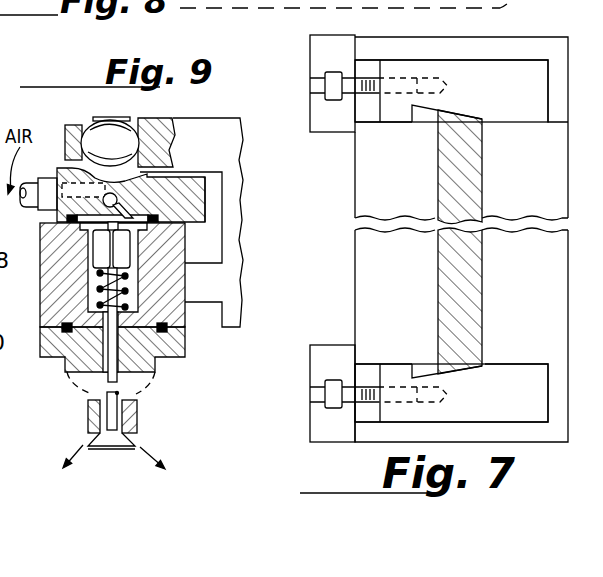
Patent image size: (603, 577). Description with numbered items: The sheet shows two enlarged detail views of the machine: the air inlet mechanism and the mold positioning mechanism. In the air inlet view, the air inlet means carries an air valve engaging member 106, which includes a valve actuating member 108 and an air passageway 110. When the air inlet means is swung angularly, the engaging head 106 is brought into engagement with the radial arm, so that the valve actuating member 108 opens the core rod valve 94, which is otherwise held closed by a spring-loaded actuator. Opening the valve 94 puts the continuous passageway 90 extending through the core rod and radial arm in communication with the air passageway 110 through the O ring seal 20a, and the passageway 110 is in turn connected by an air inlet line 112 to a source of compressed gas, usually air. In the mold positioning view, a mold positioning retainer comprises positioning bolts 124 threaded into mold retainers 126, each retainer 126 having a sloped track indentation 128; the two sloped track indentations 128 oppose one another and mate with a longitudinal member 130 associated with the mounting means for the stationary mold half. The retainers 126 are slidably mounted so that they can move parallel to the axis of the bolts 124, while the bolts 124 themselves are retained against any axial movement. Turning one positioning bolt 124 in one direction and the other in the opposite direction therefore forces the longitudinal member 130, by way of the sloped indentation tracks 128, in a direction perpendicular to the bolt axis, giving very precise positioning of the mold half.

In FIG. 9, the air valve engaging member 106 is at (186, 190).
In FIG. 9, the air passageway 110 is at (158, 214).
In FIG. 9, the O ring seal 20a is at (162, 221).
In FIG. 9, the valve actuating member 108 is at (117, 230).
In FIG. 9, the continuous passageway 90 is at (128, 304).
In FIG. 9, the core rod valve 94 is at (117, 442).
In FIG. 9, the air inlet line 112 is at (30, 186).
In FIG. 7, the positioning bolts 124 is at (332, 83).
In FIG. 7, the mold retainers 126 is at (517, 75).
In FIG. 7, the sloped track indentations 128 is at (462, 110).
In FIG. 7, the longitudinal member 130 is at (470, 185).